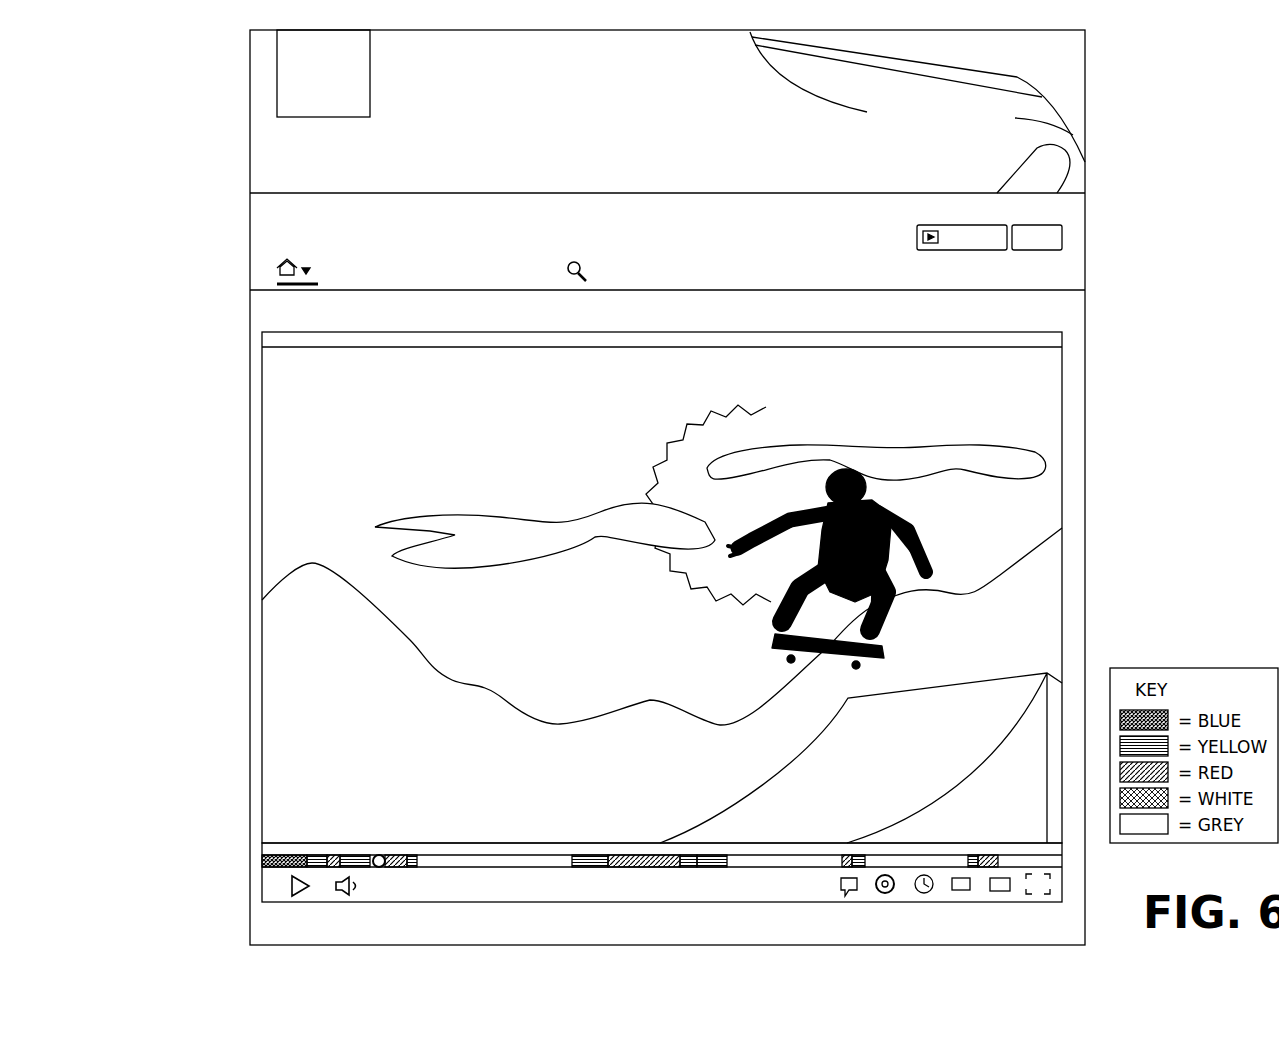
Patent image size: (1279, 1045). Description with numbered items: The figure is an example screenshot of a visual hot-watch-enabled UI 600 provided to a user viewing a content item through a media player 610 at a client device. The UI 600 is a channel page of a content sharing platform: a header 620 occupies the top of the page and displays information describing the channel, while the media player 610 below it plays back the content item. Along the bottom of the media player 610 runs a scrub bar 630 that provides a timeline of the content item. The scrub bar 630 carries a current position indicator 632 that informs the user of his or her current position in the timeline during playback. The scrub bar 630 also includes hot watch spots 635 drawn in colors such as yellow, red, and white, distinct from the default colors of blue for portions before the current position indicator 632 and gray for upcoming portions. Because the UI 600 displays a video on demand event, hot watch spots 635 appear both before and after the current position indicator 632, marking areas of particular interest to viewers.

The visual "hot watch"-enabled UI 600 is at (248, 108).
The media player 610 is at (256, 435).
The header 620 is at (1095, 30).
The scrub bar 630 is at (630, 865).
The current position indicator 632 is at (379, 855).
The "hot watch" spots 635 is at (393, 868).